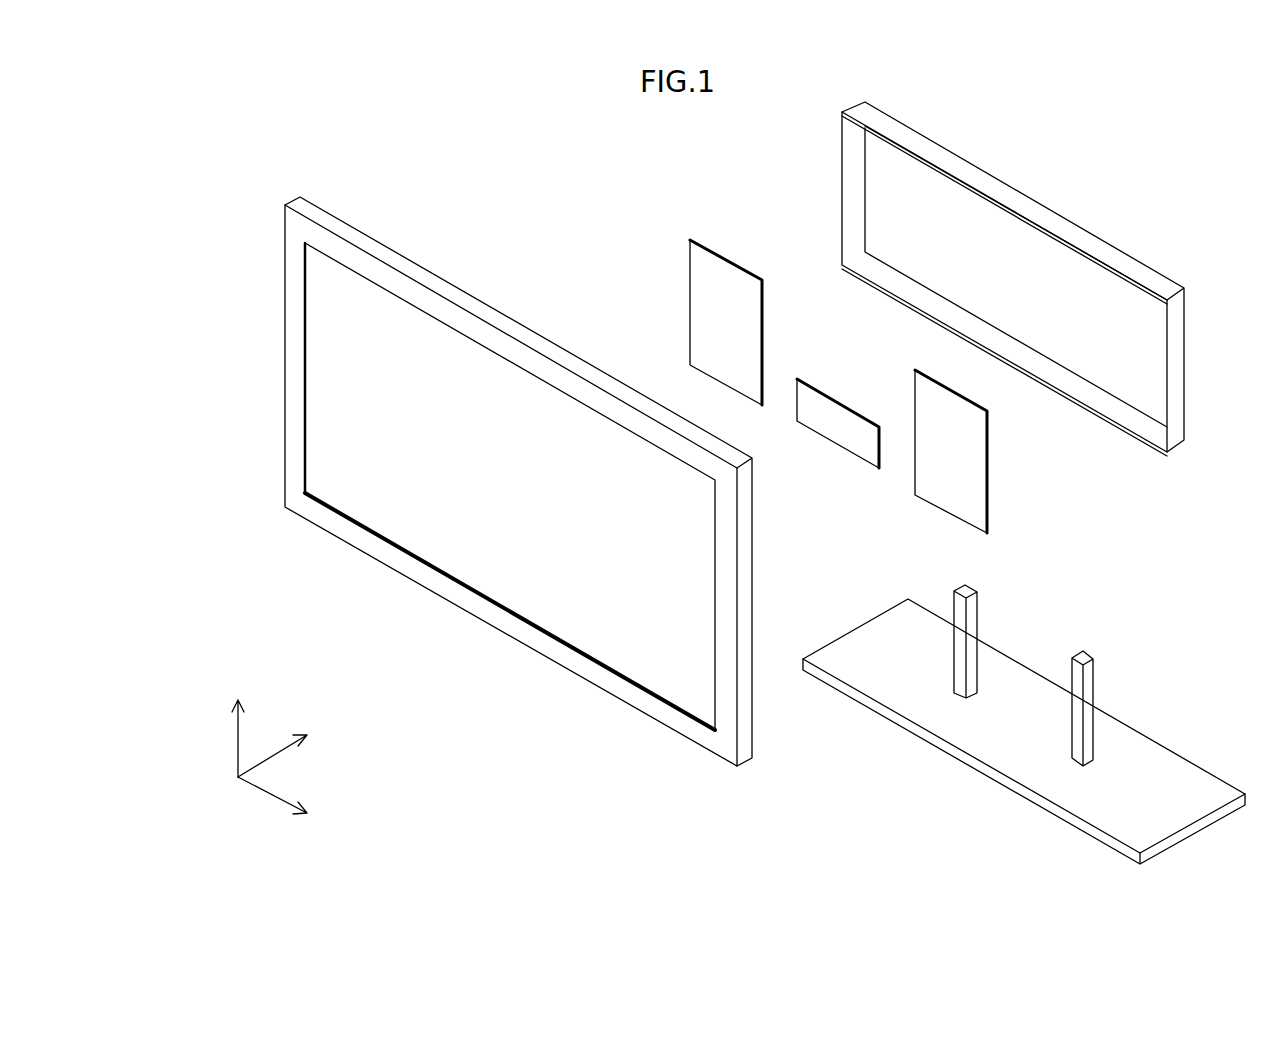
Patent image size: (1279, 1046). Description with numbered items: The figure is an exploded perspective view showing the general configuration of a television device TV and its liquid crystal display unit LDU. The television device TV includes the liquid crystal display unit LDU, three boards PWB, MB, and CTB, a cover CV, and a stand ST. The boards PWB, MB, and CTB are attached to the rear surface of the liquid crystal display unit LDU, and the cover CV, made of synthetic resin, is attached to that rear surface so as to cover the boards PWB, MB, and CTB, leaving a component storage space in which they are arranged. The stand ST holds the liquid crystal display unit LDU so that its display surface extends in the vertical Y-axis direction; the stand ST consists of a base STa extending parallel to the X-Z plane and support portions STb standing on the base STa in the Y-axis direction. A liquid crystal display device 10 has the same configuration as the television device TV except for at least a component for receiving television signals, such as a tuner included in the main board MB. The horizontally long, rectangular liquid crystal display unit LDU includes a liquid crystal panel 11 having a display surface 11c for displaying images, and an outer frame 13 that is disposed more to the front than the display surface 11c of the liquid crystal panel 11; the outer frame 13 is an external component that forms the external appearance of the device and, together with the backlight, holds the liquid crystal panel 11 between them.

The television device TV is at (298, 87).
The liquid crystal display device 10 is at (418, 142).
The liquid crystal display unit LDU is at (285, 335).
The outer frame 13 is at (295, 256).
The liquid crystal panel 11 is at (500, 578).
The display surface 11c is at (423, 518).
The main board MB is at (720, 255).
The board CTB is at (830, 398).
The board PWB is at (987, 450).
The cover CV is at (1035, 195).
The stand ST is at (916, 733).
The base STa is at (1002, 758).
The support portions STb is at (1072, 670).